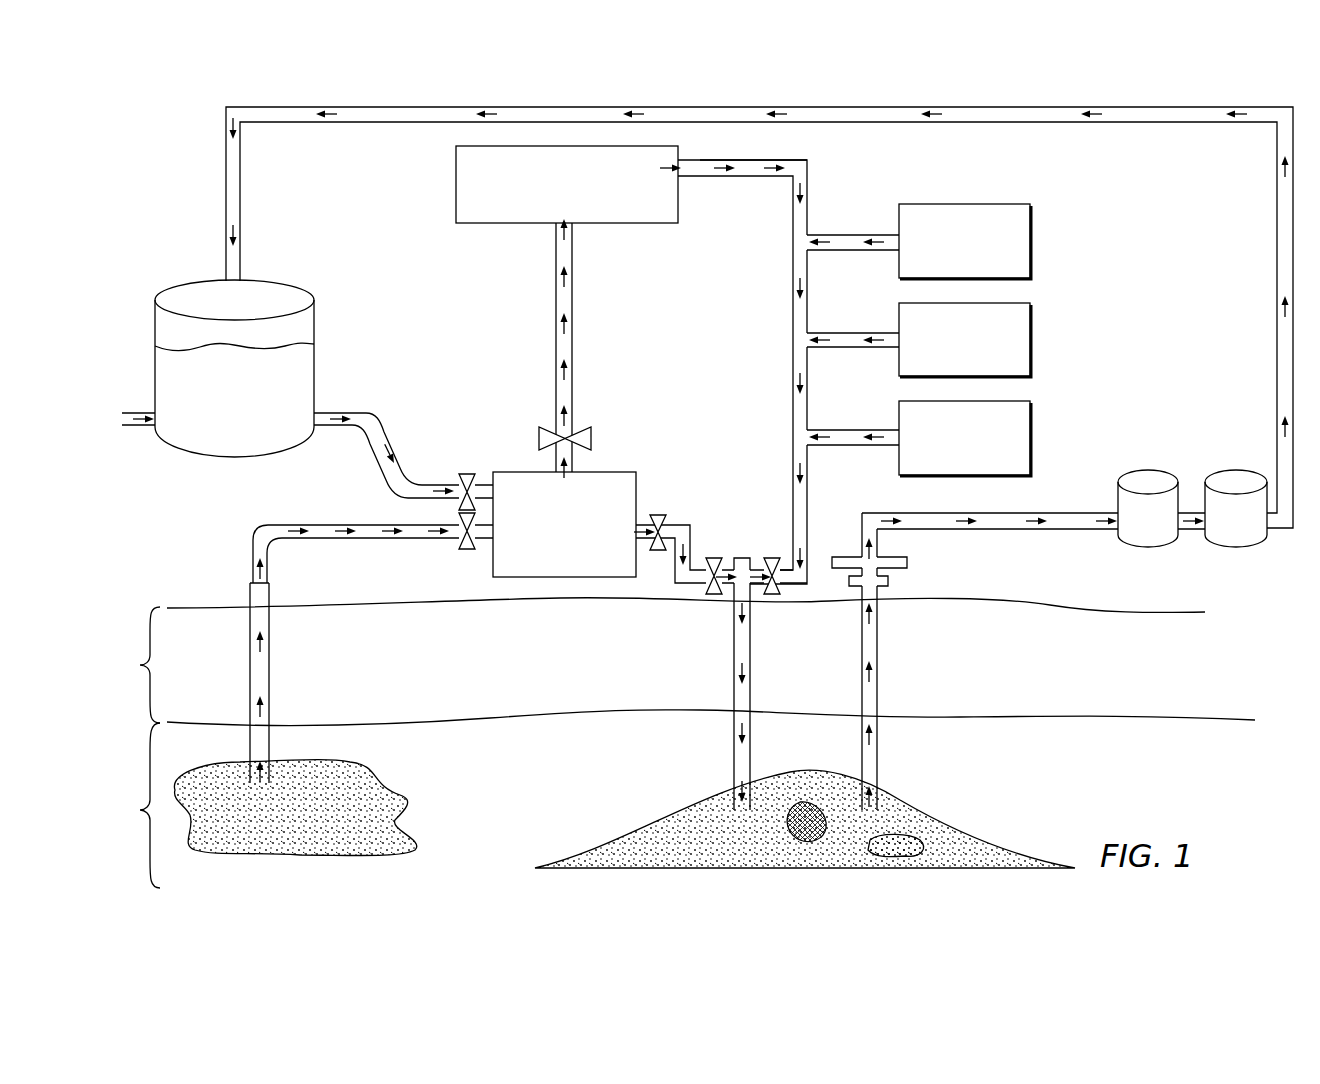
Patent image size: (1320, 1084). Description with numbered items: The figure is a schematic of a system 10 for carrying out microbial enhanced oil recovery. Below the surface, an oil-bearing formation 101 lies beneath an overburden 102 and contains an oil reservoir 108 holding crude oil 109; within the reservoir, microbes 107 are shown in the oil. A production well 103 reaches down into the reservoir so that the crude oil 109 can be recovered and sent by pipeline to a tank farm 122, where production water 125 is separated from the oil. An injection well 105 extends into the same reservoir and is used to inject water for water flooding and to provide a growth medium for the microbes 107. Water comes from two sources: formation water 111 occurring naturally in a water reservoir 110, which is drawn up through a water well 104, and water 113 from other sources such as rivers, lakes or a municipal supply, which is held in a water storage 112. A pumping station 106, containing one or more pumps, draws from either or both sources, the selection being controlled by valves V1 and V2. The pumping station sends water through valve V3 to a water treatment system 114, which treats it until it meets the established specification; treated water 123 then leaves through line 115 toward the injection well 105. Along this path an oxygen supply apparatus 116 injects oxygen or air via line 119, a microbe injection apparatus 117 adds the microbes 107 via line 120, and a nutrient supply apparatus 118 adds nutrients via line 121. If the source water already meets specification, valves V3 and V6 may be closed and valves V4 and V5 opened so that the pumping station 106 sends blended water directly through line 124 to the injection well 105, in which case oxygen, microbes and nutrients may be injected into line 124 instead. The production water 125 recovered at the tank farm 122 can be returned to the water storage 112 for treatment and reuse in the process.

The system 10 is at (698, 504).
The oil-bearing formation 101 is at (679, 799).
The overburden 102 is at (654, 660).
The production well 103 is at (878, 672).
The water well 104 is at (269, 670).
The injection well 105 is at (734, 666).
The pumping station 106 is at (555, 524).
The microbes 107 is at (808, 842).
The oil reservoir 108 is at (712, 806).
The crude oil 109 is at (664, 841).
The water reservoir 110 is at (386, 785).
The formation water 111 is at (356, 845).
The water storage 112 is at (290, 367).
The water 113 is at (300, 268).
The water treatment system 114 is at (568, 184).
The line 115 is at (718, 174).
The oxygen supply apparatus 116 is at (1056, 242).
The microbe injection apparatus 117 is at (1056, 340).
The nutrient supply apparatus 118 is at (1056, 439).
The line 119 is at (856, 235).
The line 120 is at (856, 333).
The line 121 is at (856, 430).
The tank farm 122 is at (1192, 550).
The treated water 123 is at (722, 165).
The line 124 is at (686, 522).
The production water 125 is at (1277, 300).
The valve V1 is at (464, 547).
The valve V2 is at (465, 480).
The valve V3 is at (577, 439).
The valve V4 is at (655, 521).
The valve V5 is at (712, 565).
The valve V6 is at (770, 565).